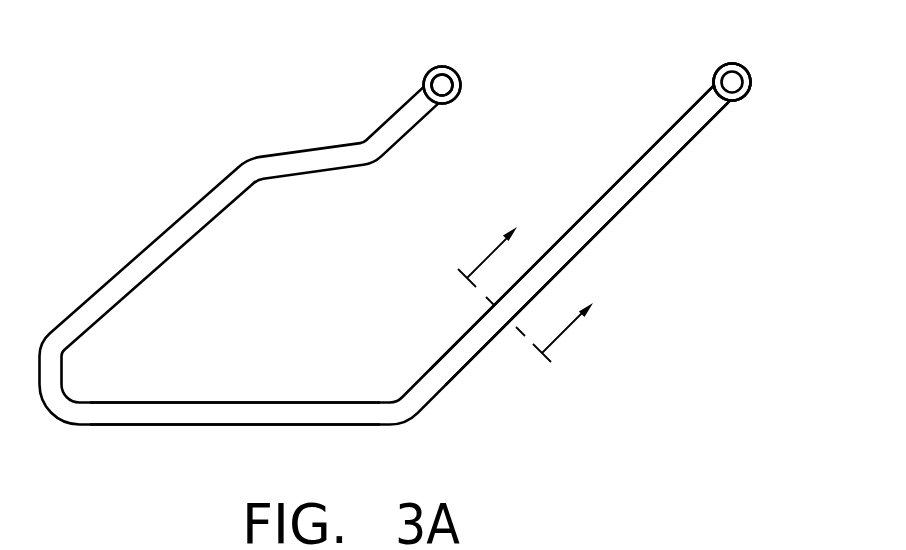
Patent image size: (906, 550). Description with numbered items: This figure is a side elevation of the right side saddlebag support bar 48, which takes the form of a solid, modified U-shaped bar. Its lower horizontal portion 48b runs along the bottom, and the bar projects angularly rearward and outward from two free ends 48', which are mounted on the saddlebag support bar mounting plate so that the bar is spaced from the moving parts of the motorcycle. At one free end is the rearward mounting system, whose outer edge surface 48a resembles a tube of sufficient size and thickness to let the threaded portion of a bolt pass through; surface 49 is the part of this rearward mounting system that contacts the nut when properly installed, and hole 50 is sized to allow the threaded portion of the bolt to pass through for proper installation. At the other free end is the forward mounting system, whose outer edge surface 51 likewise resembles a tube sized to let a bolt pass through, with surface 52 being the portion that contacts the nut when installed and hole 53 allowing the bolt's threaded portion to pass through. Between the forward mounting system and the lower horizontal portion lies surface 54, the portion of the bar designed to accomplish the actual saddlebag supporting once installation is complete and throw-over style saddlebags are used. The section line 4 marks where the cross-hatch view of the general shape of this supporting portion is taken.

The right side saddlebag support bar 48 is at (390, 249).
The free ends 48' is at (613, 53).
The outer edge surface of rearward mounting system 48a is at (442, 66).
The lower horizontal portion 48b is at (292, 420).
The surface 49 is at (455, 85).
The hole 50 is at (443, 90).
The outer edge surface of forward mounting system 51 is at (715, 65).
The surface 52 is at (732, 63).
The hole 53 is at (741, 85).
The surface 54 is at (597, 218).
The section line 4- 4 is at (515, 310).